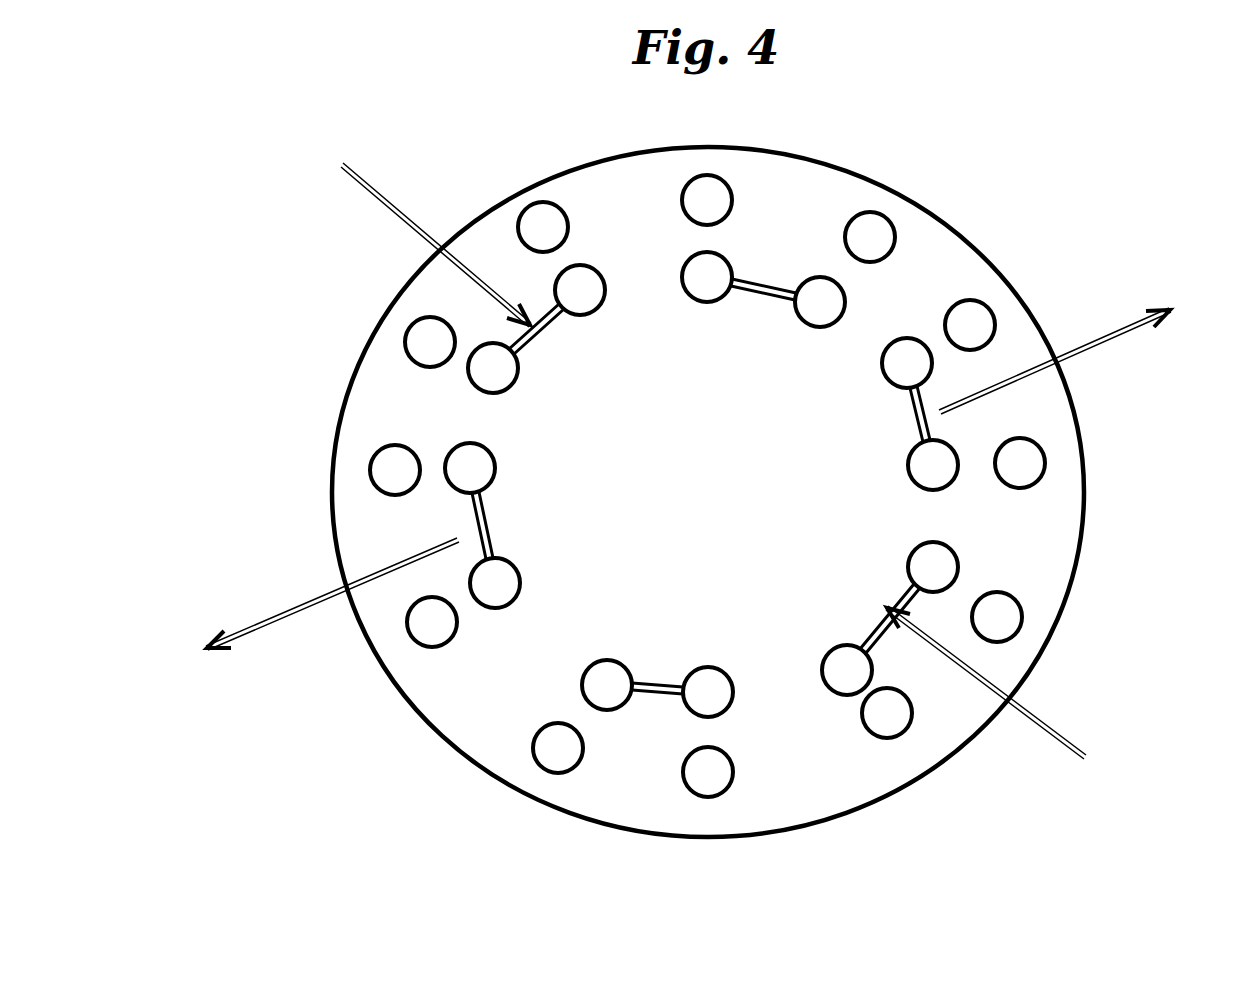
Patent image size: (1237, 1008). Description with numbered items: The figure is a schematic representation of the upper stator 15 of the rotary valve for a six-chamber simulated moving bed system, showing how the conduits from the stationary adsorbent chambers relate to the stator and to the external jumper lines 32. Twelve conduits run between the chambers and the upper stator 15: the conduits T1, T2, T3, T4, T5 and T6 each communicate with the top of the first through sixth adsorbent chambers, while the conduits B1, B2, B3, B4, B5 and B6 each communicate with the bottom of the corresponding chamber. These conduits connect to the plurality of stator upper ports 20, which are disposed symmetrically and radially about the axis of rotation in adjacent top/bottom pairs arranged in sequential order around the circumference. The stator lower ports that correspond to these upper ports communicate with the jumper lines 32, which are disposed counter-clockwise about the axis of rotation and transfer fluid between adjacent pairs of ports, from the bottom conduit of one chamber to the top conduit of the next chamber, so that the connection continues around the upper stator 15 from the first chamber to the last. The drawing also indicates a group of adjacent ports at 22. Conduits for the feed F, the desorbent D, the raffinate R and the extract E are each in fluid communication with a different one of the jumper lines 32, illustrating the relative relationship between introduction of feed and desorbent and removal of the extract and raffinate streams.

The upper stator 15 is at (935, 210).
The stator upper ports 20 is at (450, 647).
The coil group 22 is at (693, 293).
The jumper lines 32 is at (757, 293).
The conduit between top of adsorbent chamber 1 and upper stator T1 is at (527, 208).
The conduit between top of adsorbent chamber 2 and upper stator T2 is at (875, 213).
The conduit between top of adsorbent chamber 3 and upper stator T3 is at (1037, 444).
The conduit between top of adsorbent chamber 4 and upper stator T4 is at (912, 715).
The conduit between top of adsorbent chamber 5 and upper stator T5 is at (533, 748).
The conduit between top of adsorbent chamber 6 and upper stator T6 is at (371, 458).
The conduit between bottom of adsorbent chamber 1 and upper stator B1 is at (692, 180).
The conduit between bottom of adsorbent chamber 2 and upper stator B2 is at (985, 305).
The conduit between bottom of adsorbent chamber 3 and upper stator B3 is at (1018, 632).
The conduit between bottom of adsorbent chamber 4 and upper stator B4 is at (733, 775).
The conduit between bottom of adsorbent chamber 5 and upper stator B5 is at (433, 647).
The conduit between bottom of adsorbent chamber 6 and upper stator B6 is at (417, 322).
The desorbent conduit D is at (413, 232).
The extract conduit E is at (347, 554).
The raffinate conduit R is at (1074, 355).
The feed conduit F is at (970, 662).